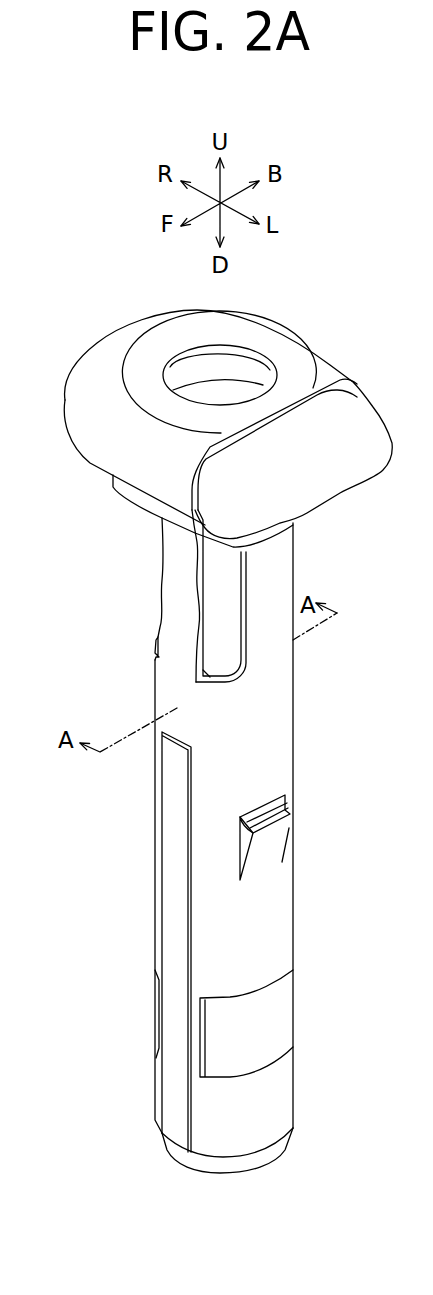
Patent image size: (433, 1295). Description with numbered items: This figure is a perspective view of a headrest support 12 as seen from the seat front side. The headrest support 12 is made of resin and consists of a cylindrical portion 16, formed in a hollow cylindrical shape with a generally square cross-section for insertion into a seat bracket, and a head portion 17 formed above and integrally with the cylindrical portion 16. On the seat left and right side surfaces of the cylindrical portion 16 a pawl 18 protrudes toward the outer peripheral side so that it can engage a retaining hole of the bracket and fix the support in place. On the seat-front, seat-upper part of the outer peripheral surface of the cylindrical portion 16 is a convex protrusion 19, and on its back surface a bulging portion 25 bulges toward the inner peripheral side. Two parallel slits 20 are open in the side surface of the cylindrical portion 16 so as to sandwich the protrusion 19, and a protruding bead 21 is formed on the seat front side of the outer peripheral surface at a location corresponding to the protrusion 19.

The headrest support 12 is at (330, 336).
The cylindrical portion 16 is at (293, 742).
The head portion 17 is at (82, 441).
The pawl 18 is at (277, 833).
The protrusion 19 is at (182, 587).
The slit 20 is at (210, 677).
The protruding bead 21 is at (175, 925).
The bulging portion 25 is at (204, 594).